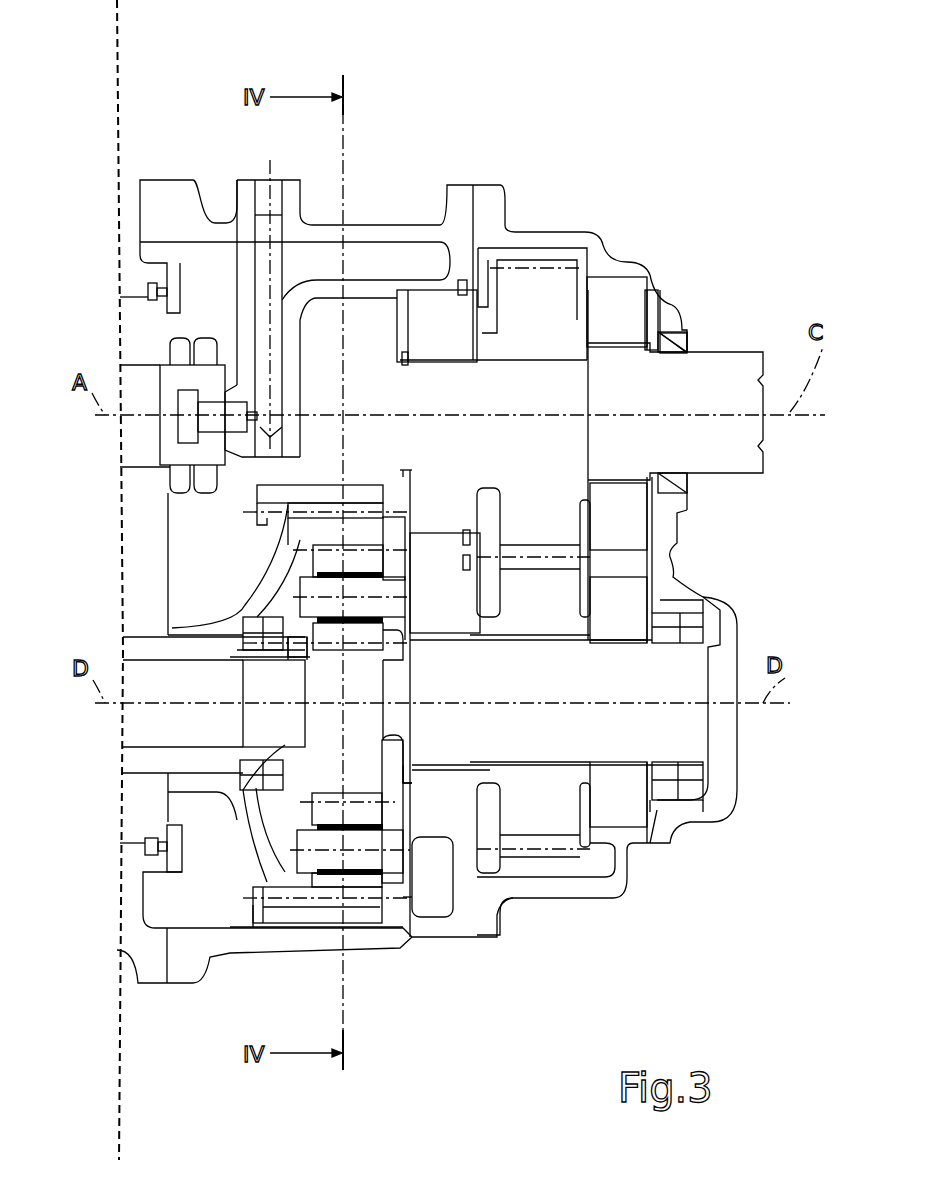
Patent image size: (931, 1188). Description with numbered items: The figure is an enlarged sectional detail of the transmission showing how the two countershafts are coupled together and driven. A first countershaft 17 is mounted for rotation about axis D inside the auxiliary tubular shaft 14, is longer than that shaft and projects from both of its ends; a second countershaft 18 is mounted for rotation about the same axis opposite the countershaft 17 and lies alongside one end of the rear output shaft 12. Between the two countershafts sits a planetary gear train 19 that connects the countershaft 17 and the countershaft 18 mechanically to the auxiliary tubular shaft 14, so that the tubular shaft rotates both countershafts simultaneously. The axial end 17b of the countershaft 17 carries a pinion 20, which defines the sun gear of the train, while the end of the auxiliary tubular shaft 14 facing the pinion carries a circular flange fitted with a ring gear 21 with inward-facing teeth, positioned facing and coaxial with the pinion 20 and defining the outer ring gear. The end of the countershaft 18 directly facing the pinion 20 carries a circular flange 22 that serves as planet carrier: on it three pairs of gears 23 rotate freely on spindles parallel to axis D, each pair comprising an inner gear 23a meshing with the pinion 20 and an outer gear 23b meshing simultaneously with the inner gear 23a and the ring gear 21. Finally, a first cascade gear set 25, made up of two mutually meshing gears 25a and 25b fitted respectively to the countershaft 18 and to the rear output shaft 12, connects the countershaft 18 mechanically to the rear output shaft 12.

The rear output shaft 12 is at (717, 368).
The auxiliary tubular shaft 14 is at (137, 643).
The first countershaft 17 is at (157, 723).
The axial end of countershaft 17 17b is at (260, 723).
The second countershaft 18 is at (657, 740).
The planetary gear train 19 is at (299, 940).
The pinion 20 is at (383, 713).
The ring gear 21 is at (332, 495).
The circular flange 22 is at (400, 565).
The pair of gears 23 is at (290, 822).
The inner gear 23a is at (323, 567).
The outer gear 23b is at (365, 882).
The first cascade gear set 25 is at (590, 244).
The gear of first cascade gear set 25a is at (552, 818).
The gear of first cascade gear set 25b is at (517, 293).